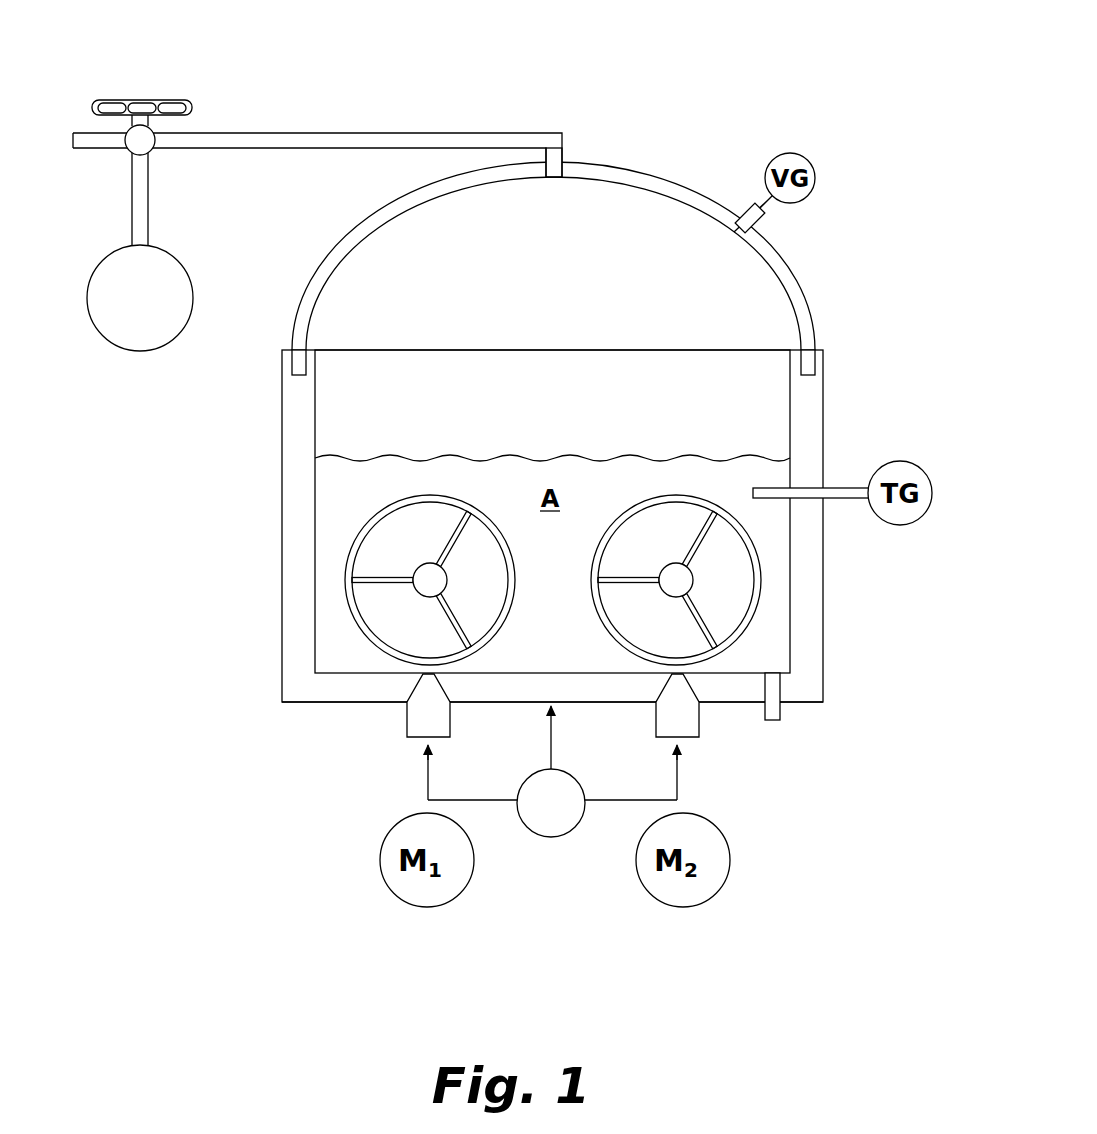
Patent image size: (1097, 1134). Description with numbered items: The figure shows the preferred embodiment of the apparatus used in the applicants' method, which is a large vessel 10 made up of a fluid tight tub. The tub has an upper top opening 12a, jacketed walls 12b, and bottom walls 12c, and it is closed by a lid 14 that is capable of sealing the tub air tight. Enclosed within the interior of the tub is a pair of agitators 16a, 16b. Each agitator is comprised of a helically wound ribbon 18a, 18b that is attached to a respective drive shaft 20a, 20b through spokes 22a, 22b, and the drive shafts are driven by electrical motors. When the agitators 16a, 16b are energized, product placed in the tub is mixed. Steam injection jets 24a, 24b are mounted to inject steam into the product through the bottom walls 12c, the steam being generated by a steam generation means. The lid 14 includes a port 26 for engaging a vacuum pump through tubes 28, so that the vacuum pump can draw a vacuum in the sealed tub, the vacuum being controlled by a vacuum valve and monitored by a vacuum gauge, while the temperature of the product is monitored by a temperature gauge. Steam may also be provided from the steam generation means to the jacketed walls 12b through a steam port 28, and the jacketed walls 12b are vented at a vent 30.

The vessel 10 is at (714, 113).
The upper top opening 12a is at (352, 350).
The jacketed walls 12b is at (823, 436).
The bottom walls 12c is at (517, 703).
The lid 14 is at (341, 242).
The agitator 16a is at (343, 617).
The agitator 16b is at (772, 532).
The ribbon 18a is at (362, 527).
The ribbon 18b is at (763, 567).
The drive shaft 20a is at (425, 585).
The drive shaft 20b is at (670, 573).
The spokes 22a is at (383, 587).
The spokes 22b is at (697, 537).
The steam injection jet 24a is at (412, 721).
The steam injection jet 24b is at (688, 721).
The port 26 is at (552, 178).
The tubes 28 is at (287, 133).
The vent 30 is at (773, 722).